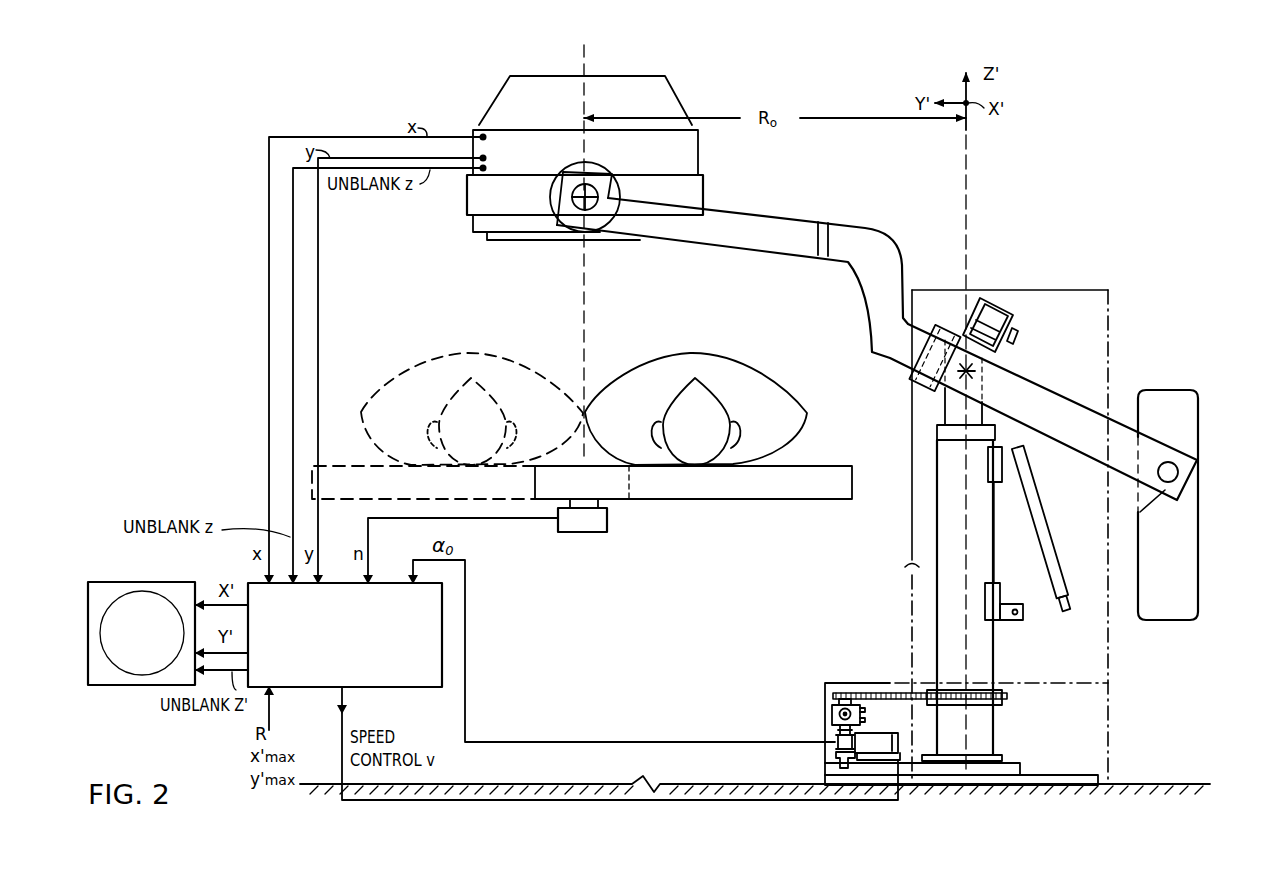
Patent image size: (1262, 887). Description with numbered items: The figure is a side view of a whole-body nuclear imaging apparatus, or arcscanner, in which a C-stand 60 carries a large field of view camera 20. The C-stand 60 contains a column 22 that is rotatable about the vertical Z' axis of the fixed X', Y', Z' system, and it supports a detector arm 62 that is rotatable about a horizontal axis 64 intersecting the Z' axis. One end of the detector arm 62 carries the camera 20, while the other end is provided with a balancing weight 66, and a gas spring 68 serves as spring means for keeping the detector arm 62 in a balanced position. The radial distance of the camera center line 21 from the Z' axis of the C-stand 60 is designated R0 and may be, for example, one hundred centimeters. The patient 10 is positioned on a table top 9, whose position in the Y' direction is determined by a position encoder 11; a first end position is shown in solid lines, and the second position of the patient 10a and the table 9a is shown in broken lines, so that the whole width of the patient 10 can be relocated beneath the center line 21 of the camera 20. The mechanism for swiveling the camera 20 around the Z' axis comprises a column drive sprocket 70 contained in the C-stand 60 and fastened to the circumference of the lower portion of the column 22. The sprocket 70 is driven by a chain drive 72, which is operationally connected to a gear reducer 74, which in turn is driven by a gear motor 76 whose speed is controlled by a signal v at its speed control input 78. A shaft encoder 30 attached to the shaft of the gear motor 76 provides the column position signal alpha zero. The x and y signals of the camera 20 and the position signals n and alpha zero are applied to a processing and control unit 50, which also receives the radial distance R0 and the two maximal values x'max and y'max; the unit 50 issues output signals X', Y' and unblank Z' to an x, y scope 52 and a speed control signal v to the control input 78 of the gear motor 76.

The table top 9 is at (822, 479).
The table 9a is at (346, 475).
The patient 10 is at (745, 382).
The patient 10a is at (413, 368).
The position encoder 11 is at (607, 525).
The large field of view camera 20 is at (495, 105).
The camera center line 21 is at (584, 296).
The column 22 is at (940, 567).
The shaft encoder 30 is at (838, 760).
The processing and control unit 50 is at (418, 680).
The x, y scope 52 is at (105, 675).
The C-stand 60 is at (1105, 328).
The detector arm 62 is at (762, 228).
The horizontal axis 64 is at (975, 373).
The balancing weight 66 is at (1190, 574).
The gas spring 68 is at (1033, 553).
The column drive sprocket 70 is at (1005, 693).
The chain drive 72 is at (888, 692).
The gear reducer 74 is at (832, 710).
The gear motor 76 is at (838, 742).
The speed control input 78 is at (900, 758).